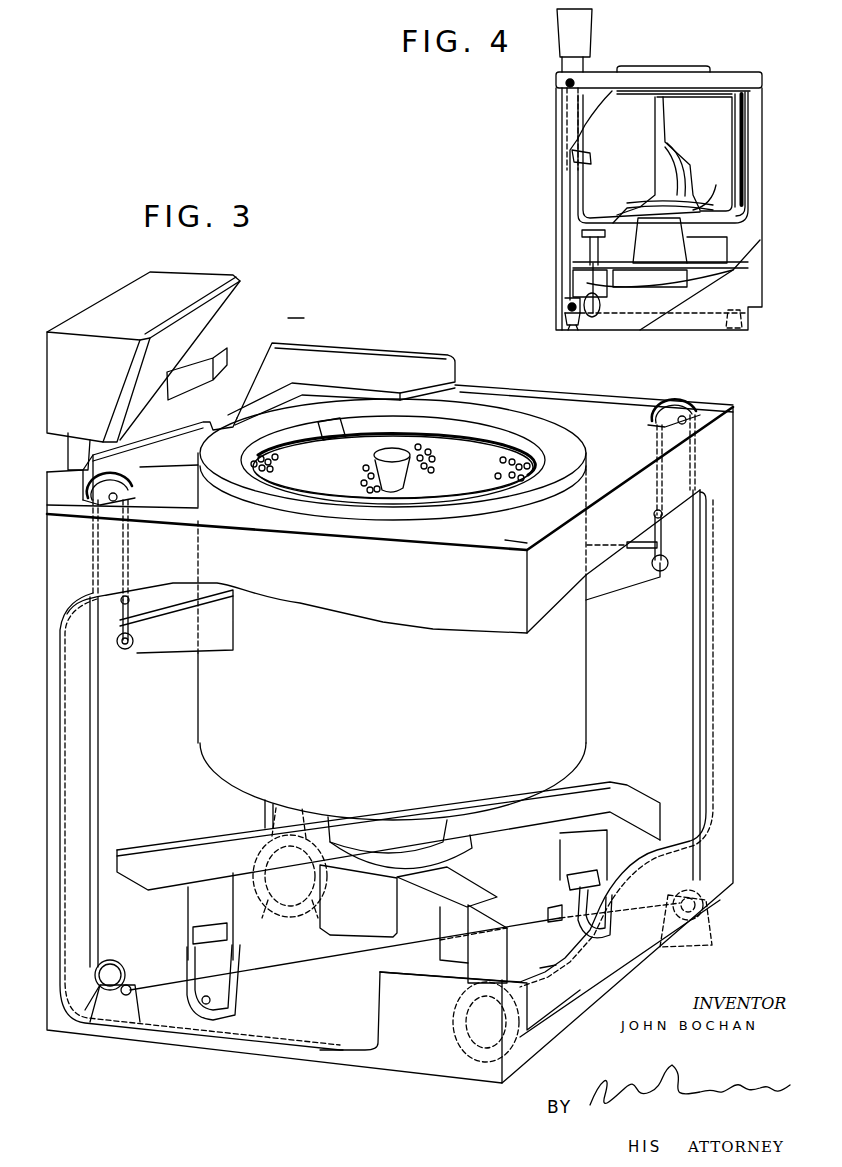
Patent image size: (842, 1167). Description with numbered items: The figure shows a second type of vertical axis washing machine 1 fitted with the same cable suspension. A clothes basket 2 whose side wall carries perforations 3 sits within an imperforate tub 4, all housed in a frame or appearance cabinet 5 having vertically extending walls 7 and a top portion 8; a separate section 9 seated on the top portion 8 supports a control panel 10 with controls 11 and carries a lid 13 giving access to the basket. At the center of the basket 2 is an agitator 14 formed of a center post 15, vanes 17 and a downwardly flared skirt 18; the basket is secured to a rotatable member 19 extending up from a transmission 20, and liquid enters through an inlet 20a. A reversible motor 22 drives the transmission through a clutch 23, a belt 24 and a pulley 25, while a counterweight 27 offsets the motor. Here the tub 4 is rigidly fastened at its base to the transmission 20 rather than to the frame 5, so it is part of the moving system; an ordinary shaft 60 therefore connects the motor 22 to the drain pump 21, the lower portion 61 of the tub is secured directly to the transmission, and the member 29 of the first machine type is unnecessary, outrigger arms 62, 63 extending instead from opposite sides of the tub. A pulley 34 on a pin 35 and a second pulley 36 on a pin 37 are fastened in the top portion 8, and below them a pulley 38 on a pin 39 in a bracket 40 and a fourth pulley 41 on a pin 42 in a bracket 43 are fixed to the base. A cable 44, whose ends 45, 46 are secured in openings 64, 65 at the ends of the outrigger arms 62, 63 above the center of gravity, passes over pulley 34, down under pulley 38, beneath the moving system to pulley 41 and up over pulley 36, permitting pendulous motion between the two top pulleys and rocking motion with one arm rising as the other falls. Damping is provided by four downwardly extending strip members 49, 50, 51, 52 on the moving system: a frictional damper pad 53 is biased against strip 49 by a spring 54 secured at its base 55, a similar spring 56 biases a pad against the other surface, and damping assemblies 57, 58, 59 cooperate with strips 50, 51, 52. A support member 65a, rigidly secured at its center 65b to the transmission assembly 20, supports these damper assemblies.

In FIG. 3, the washing machine 1 is at (296, 308).
In FIG. 3, the clothes basket 2 is at (473, 455).
In FIG. 4, the clothes basket 2 is at (750, 152).
In FIG. 3, the perforations 3 is at (517, 470).
In FIG. 4, the perforations 3 is at (748, 127).
In FIG. 3, the tub 4 is at (580, 740).
In FIG. 4, the tub 4 is at (750, 226).
In FIG. 3, the frame or appearance cabinet 5 is at (732, 461).
In FIG. 4, the frame or appearance cabinet 5 is at (560, 115).
In FIG. 3, the vertically extending walls 7 is at (705, 753).
In FIG. 3, the top portion 8 is at (515, 548).
In FIG. 3, the separate section 9 is at (408, 352).
In FIG. 4, the separate section 9 is at (750, 72).
In FIG. 3, the control panel 10 is at (125, 297).
In FIG. 4, the control panel 10 is at (590, 22).
In FIG. 3, the controls 11 is at (205, 355).
In FIG. 4, the lid 13 is at (680, 67).
In FIG. 3, the agitator 14 is at (377, 489).
In FIG. 4, the agitator 14 is at (667, 132).
In FIG. 4, the center post 15 is at (655, 120).
In FIG. 4, the vanes 17 is at (690, 163).
In FIG. 4, the skirt 18 is at (703, 205).
In FIG. 4, the rotatable member 19 is at (657, 228).
In FIG. 3, the transmission 20 is at (338, 912).
In FIG. 4, the transmission 20 is at (707, 250).
In FIG. 3, the inlet 20a is at (335, 420).
In FIG. 4, the pump 21 is at (593, 230).
In FIG. 3, the reversible motor 22 is at (298, 920).
In FIG. 4, the reversible motor 22 is at (580, 305).
In FIG. 4, the clutch 23 is at (583, 282).
In FIG. 4, the belt 24 is at (642, 322).
In FIG. 4, the pulley 25 is at (680, 290).
In FIG. 3, the counterweight 27 is at (435, 950).
In FIG. 4, the member 29 is at (740, 270).
In FIG. 3, the pulley 34 is at (690, 410).
In FIG. 3, the pin 35 is at (662, 425).
In FIG. 3, the second pulley 36 is at (136, 485).
In FIG. 4, the second pulley 36 is at (565, 83).
In FIG. 3, the pin 37 is at (128, 505).
In FIG. 3, the pulley 38 is at (705, 890).
In FIG. 3, the pin 39 is at (700, 908).
In FIG. 3, the bracket 40 is at (708, 945).
In FIG. 4, the bracket 40 is at (745, 325).
In FIG. 3, the fourth pulley 41 is at (112, 958).
In FIG. 4, the fourth pulley 41 is at (570, 312).
In FIG. 3, the pin 42 is at (132, 992).
In FIG. 3, the bracket 43 is at (120, 1018).
In FIG. 4, the bracket 43 is at (575, 330).
In FIG. 3, the cable member 44 is at (97, 764).
In FIG. 4, the cable member 44 is at (568, 175).
In FIG. 3, the cable end 45 is at (664, 548).
In FIG. 3, the cable end 46 is at (130, 612).
In FIG. 3, the strip member 49 is at (598, 840).
In FIG. 3, the strip member 50 is at (508, 950).
In FIG. 3, the strip member 51 is at (190, 907).
In FIG. 4, the strip member 51 is at (604, 263).
In FIG. 3, the strip member 52 is at (262, 811).
In FIG. 3, the frictional damper pad 53 is at (600, 877).
In FIG. 3, the spring 54 is at (605, 928).
In FIG. 3, the base 55 is at (565, 960).
In FIG. 3, the spring 56 is at (556, 906).
In FIG. 3, the damping assembly 57 is at (485, 1062).
In FIG. 3, the damping assembly 58 is at (200, 1022).
In FIG. 4, the damping assembly 58 is at (600, 318).
In FIG. 3, the damping assembly 59 is at (280, 912).
In FIG. 4, the shaft 60 is at (588, 245).
In FIG. 4, the lower portion of the tub 61 is at (640, 205).
In FIG. 3, the outrigger arm 62 is at (620, 580).
In FIG. 3, the outrigger arm 63 is at (172, 650).
In FIG. 4, the outrigger arm 63 is at (592, 160).
In FIG. 3, the opening 64 is at (661, 571).
In FIG. 3, the opening 65 is at (125, 650).
In FIG. 3, the support member 65a is at (666, 829).
In FIG. 3, the center of support member 65b is at (380, 866).